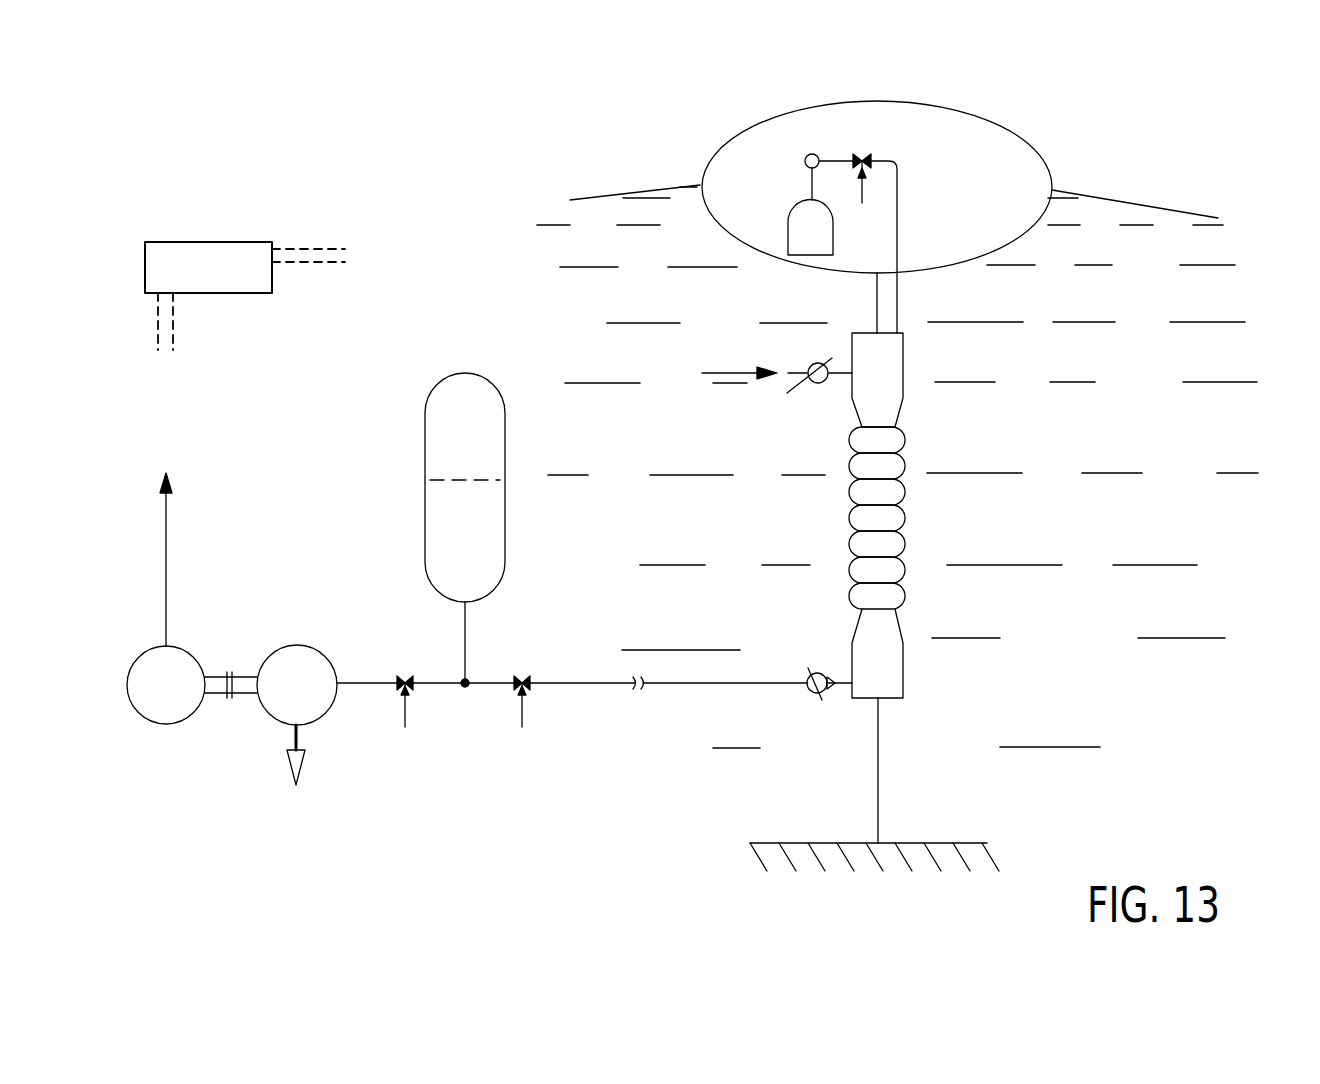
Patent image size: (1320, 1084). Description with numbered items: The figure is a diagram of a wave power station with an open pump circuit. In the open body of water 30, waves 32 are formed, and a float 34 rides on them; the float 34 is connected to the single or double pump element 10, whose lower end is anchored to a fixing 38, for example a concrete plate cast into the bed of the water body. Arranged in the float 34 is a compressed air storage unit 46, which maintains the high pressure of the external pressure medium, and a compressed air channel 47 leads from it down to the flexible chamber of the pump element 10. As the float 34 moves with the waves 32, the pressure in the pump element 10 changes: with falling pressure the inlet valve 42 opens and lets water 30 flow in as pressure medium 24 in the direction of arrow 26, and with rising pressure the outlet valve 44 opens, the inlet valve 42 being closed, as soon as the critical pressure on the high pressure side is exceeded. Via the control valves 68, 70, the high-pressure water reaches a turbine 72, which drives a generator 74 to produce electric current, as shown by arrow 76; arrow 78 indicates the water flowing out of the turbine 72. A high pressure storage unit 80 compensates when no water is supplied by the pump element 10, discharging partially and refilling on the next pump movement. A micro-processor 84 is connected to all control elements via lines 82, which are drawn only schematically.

The pump element 10 is at (993, 530).
The pressure medium 24 is at (442, 540).
The arrow 26 is at (737, 370).
The open body of water 30 is at (1107, 422).
The waves 32 is at (1180, 212).
The float 34 is at (1035, 175).
The fixing 38 is at (937, 845).
The inlet valve 42 is at (800, 387).
The outlet valve 44 is at (813, 690).
The compressed air storage unit 46 is at (797, 228).
The compressed air channel 47 is at (897, 303).
The control valve 68 is at (412, 688).
The control valve 70 is at (529, 688).
The turbine 72 is at (325, 698).
The generator 74 is at (148, 702).
The arrow 76 is at (166, 552).
The arrow 78 is at (293, 737).
The high pressure storage unit 80 is at (492, 450).
The lines 82 is at (302, 263).
The micro-processor 84 is at (228, 253).